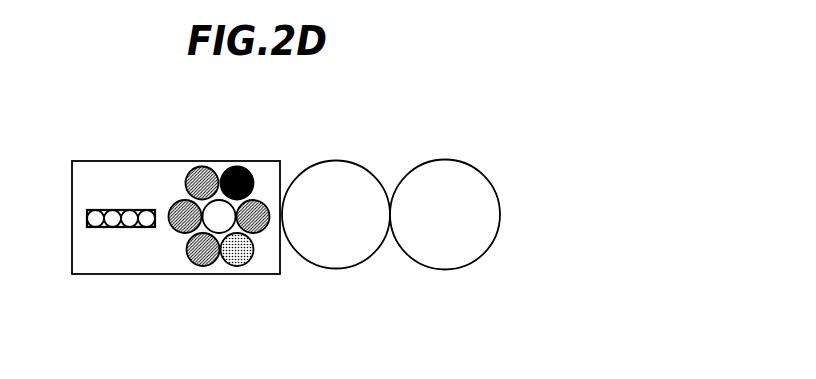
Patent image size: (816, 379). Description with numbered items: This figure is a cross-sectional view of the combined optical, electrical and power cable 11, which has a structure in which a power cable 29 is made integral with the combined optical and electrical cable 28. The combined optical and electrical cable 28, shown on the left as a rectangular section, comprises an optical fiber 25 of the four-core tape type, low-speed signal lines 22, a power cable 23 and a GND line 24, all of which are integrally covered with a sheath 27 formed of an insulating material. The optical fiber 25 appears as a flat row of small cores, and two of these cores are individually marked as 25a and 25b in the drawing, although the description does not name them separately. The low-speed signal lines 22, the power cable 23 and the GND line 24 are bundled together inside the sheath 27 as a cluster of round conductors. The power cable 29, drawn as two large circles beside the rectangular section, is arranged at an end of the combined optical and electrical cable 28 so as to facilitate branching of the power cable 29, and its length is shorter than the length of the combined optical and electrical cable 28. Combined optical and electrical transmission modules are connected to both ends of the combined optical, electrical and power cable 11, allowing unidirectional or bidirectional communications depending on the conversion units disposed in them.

The combined optical, electrical and power cable 11 is at (345, 103).
The low-speed signal lines 22 is at (203, 266).
The power cable 23 is at (243, 266).
The GND line 24 is at (240, 162).
The optical fiber 25 is at (107, 232).
The electrical conductor 25a is at (110, 228).
The electrical conductor 25b is at (133, 228).
The sheath 27 is at (270, 265).
The combined optical and electrical cable 28 is at (232, 220).
The power cable 29 is at (343, 160).